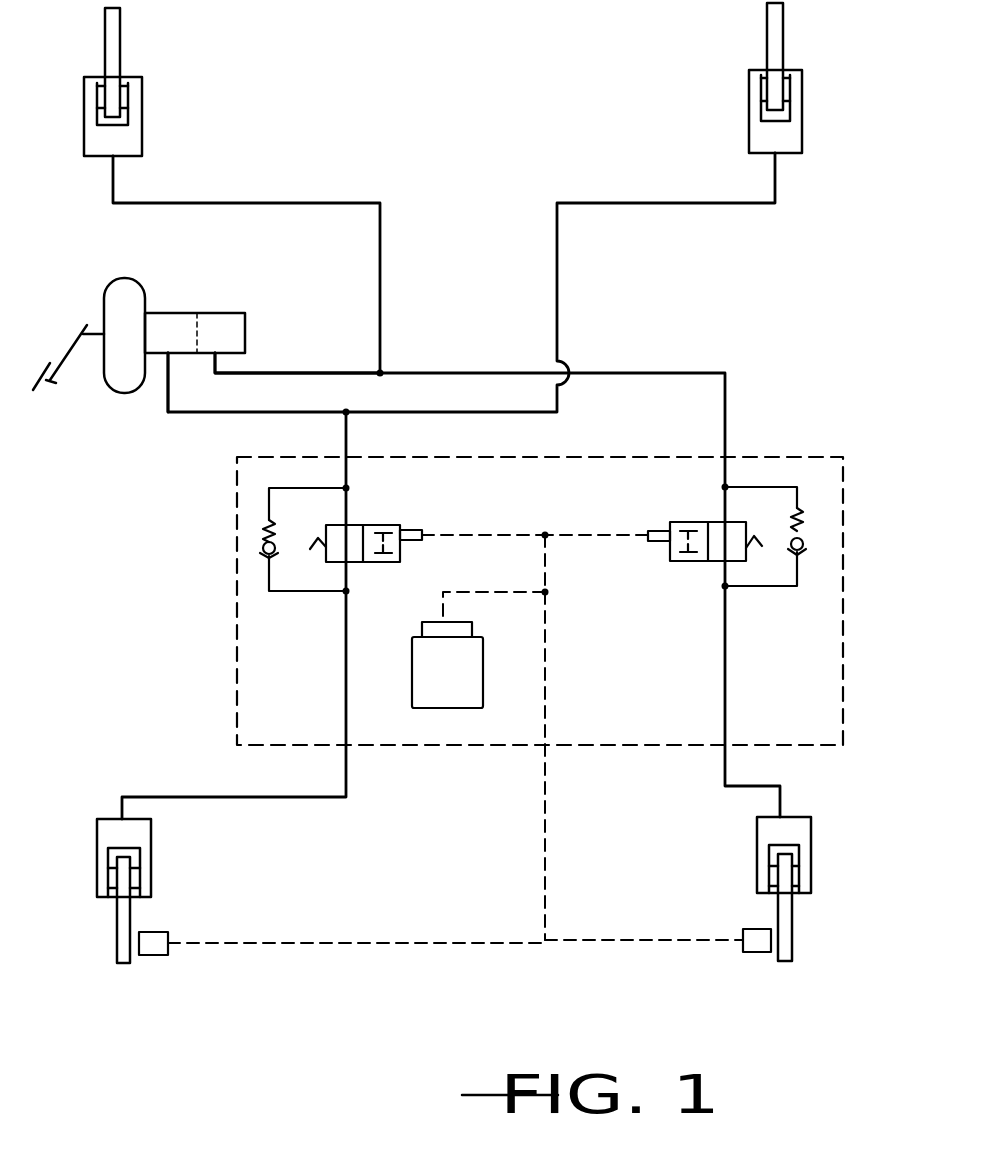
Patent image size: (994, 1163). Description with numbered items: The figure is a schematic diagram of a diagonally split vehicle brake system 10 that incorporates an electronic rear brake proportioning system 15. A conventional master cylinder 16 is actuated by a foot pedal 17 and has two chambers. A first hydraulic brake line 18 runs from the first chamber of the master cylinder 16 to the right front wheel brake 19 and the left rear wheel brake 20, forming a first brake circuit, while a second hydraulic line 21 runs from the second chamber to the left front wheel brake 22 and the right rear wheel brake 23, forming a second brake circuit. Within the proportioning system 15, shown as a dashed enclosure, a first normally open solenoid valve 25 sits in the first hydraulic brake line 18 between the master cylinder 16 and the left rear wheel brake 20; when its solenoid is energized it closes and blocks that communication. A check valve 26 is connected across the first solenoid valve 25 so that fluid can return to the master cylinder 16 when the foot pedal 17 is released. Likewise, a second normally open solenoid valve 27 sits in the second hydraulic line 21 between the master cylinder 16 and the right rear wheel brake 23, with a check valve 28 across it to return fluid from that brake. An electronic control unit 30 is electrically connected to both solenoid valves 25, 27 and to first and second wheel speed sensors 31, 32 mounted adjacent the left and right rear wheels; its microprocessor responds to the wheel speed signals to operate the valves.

The diagonally split vehicle brake system 10 is at (740, 275).
The electronic rear brake proportioning system 15 is at (757, 455).
The master cylinder 16 is at (183, 333).
The foot pedal 17 is at (65, 368).
The first hydraulic brake line 18 is at (200, 414).
The right front wheel brake 19 is at (749, 123).
The left rear wheel brake 20 is at (152, 835).
The second hydraulic line 21 is at (280, 373).
The left front wheel brake 22 is at (142, 143).
The right rear wheel brake 23 is at (767, 832).
The first normally open solenoid valve 25 is at (372, 525).
The check valve 26 is at (260, 548).
The second normally open solenoid valve 27 is at (698, 522).
The check valve 28 is at (812, 537).
The electronic control unit 30 is at (445, 710).
The first wheel speed sensor 31 is at (155, 956).
The second wheel speed sensor 32 is at (750, 952).